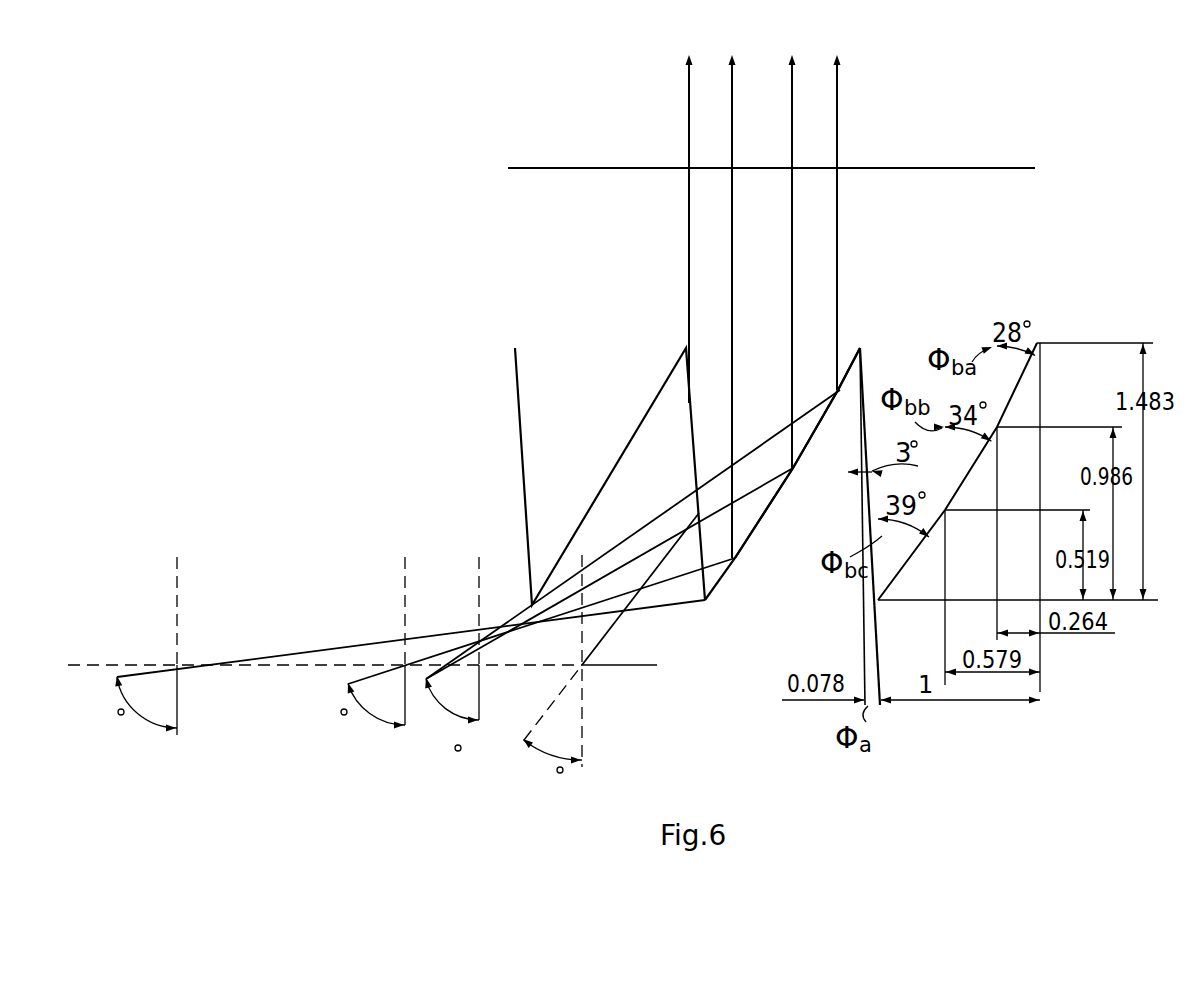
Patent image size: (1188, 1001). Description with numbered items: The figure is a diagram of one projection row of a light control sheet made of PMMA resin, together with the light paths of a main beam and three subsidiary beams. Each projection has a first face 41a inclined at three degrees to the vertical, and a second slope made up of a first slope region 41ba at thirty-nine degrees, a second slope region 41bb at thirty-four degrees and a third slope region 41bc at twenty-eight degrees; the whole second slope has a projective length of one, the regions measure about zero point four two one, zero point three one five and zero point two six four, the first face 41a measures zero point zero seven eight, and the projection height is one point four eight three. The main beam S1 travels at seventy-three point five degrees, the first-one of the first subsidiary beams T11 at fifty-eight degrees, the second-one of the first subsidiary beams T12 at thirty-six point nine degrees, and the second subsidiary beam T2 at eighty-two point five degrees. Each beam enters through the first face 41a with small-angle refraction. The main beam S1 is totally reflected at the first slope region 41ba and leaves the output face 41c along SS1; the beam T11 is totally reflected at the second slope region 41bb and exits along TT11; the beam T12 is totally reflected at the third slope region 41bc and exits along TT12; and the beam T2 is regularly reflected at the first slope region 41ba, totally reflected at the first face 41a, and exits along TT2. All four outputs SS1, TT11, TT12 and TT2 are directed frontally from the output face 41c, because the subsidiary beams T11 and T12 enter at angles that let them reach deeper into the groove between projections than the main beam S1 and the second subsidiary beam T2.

The first face 41a is at (515, 465).
The first slope region 41ba is at (743, 567).
The second slope region 41bb is at (799, 478).
The third slope region 41bc is at (838, 405).
The output face 41c is at (930, 166).
The output direction of second subsidiary beam TT2 is at (686, 88).
The output direction of main beam SS1 is at (726, 291).
The output direction of first-one of first subsidiary beams TT11 is at (787, 52).
The output direction of second-one of first subsidiary beams TT12 is at (838, 85).
The second subsidiary beam T2 is at (385, 648).
The main beam S1 is at (512, 648).
The first-one of the first subsidiary beams T11 is at (625, 583).
The second-one of the first subsidiary beams T12 is at (585, 656).